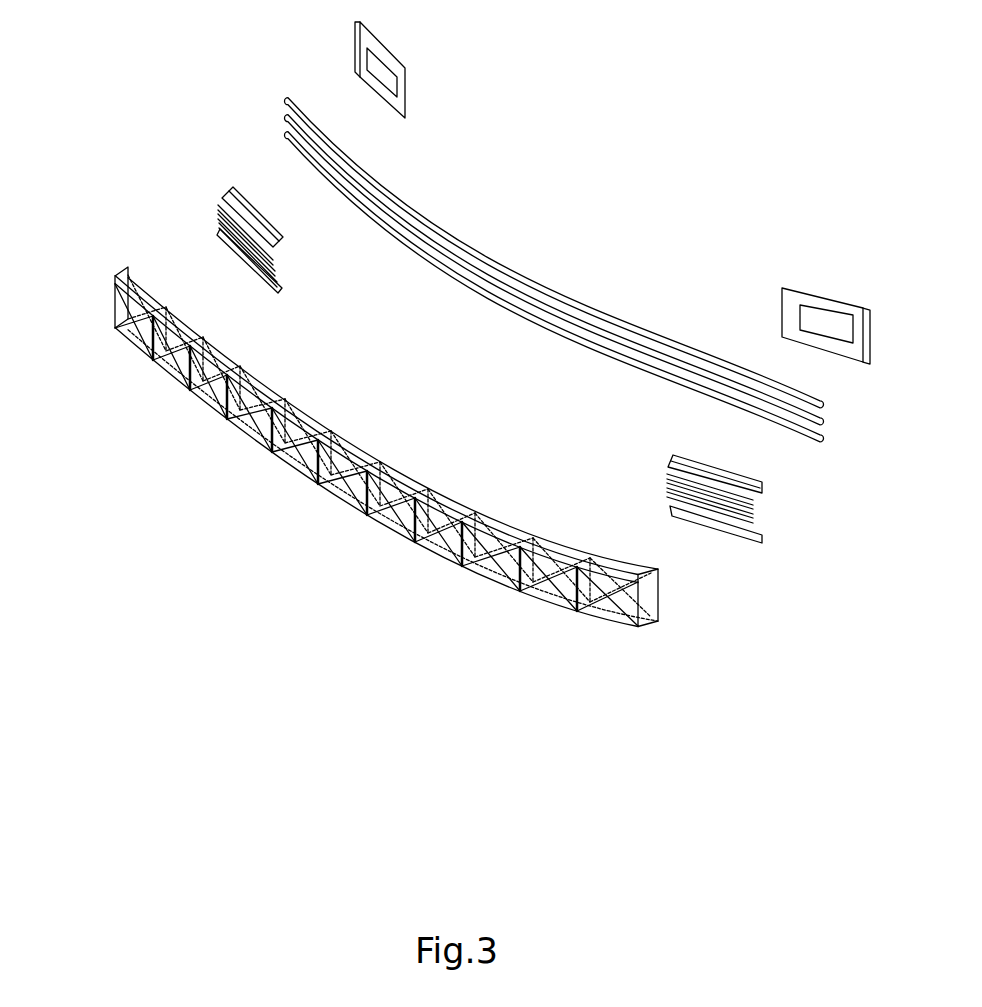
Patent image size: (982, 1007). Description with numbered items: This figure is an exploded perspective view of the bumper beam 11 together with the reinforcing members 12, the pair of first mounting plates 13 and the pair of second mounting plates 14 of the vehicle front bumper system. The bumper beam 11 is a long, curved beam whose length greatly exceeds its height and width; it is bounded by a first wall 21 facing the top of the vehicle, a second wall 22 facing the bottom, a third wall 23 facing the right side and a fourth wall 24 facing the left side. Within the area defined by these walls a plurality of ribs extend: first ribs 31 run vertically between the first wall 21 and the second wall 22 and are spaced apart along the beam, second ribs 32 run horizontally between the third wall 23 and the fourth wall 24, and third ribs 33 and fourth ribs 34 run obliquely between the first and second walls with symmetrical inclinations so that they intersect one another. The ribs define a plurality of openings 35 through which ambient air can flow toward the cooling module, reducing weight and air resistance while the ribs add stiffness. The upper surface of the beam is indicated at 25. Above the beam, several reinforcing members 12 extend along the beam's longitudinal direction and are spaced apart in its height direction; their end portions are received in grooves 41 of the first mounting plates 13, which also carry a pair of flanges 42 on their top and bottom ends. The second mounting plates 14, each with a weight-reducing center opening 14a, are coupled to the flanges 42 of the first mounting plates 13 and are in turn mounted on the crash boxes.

The bumper beam 11 is at (122, 353).
The reinforcing member 12 is at (514, 300).
The first mounting plate 13 is at (215, 221).
The second mounting plate 14 is at (375, 93).
The center opening 14a is at (380, 68).
The first wall 21 is at (450, 502).
The second wall 22 is at (440, 548).
The third wall 23 is at (114, 292).
The fourth wall 24 is at (659, 600).
The upper surface 25 is at (500, 508).
The first rib 31 is at (417, 537).
The second rib 32 is at (326, 486).
The third rib 33 is at (397, 498).
The fourth rib 34 is at (383, 472).
The opening 35 is at (302, 440).
The groove 41 is at (280, 276).
The flange 42 is at (256, 206).